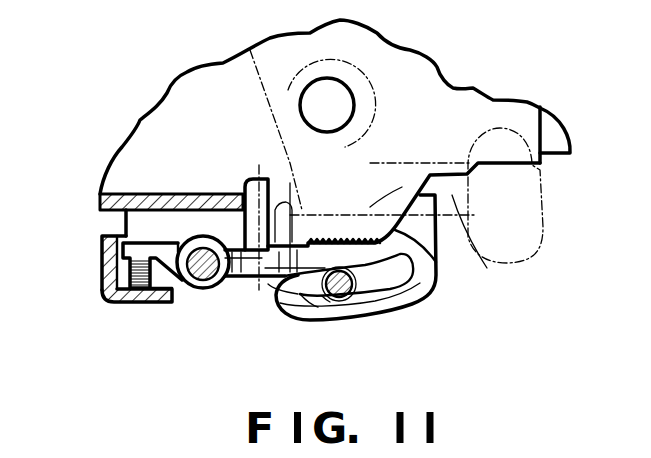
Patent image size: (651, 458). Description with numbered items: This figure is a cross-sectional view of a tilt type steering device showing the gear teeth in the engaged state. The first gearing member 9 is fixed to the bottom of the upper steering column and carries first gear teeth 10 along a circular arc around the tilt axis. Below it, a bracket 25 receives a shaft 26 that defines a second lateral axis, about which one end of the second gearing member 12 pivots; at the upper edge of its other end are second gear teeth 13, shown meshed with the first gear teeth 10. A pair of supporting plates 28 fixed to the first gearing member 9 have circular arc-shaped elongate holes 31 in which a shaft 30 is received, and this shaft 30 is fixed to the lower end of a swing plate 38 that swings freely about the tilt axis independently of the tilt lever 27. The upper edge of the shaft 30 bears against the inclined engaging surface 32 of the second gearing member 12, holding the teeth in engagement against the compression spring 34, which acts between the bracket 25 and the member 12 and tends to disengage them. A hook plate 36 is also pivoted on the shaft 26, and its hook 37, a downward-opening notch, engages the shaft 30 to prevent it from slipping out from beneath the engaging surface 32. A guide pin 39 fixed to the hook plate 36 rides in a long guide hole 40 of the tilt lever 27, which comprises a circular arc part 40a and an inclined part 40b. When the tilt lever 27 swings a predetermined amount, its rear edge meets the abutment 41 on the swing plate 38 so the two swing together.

The first gearing member 9 is at (441, 248).
The first gear teeth 10 is at (290, 290).
The second gearing member 12 is at (212, 292).
The second gear teeth 13 is at (372, 165).
The bracket 25 is at (101, 255).
The shaft 26 is at (193, 300).
The tilt lever 27 is at (478, 240).
The supporting plates 28 is at (420, 275).
The shaft 30 is at (346, 294).
The elongate holes 31 is at (416, 283).
The engaging surface 32 is at (360, 280).
The compression spring 34 is at (105, 296).
The hook plate 36 is at (320, 306).
The hook 37 is at (330, 302).
The swing plate 38 is at (392, 197).
The guide pin 39 is at (247, 180).
The long guide hole 40 is at (176, 205).
The circular arc part 40a is at (196, 300).
The inclined part 40b is at (259, 290).
The abutment 41 is at (250, 50).